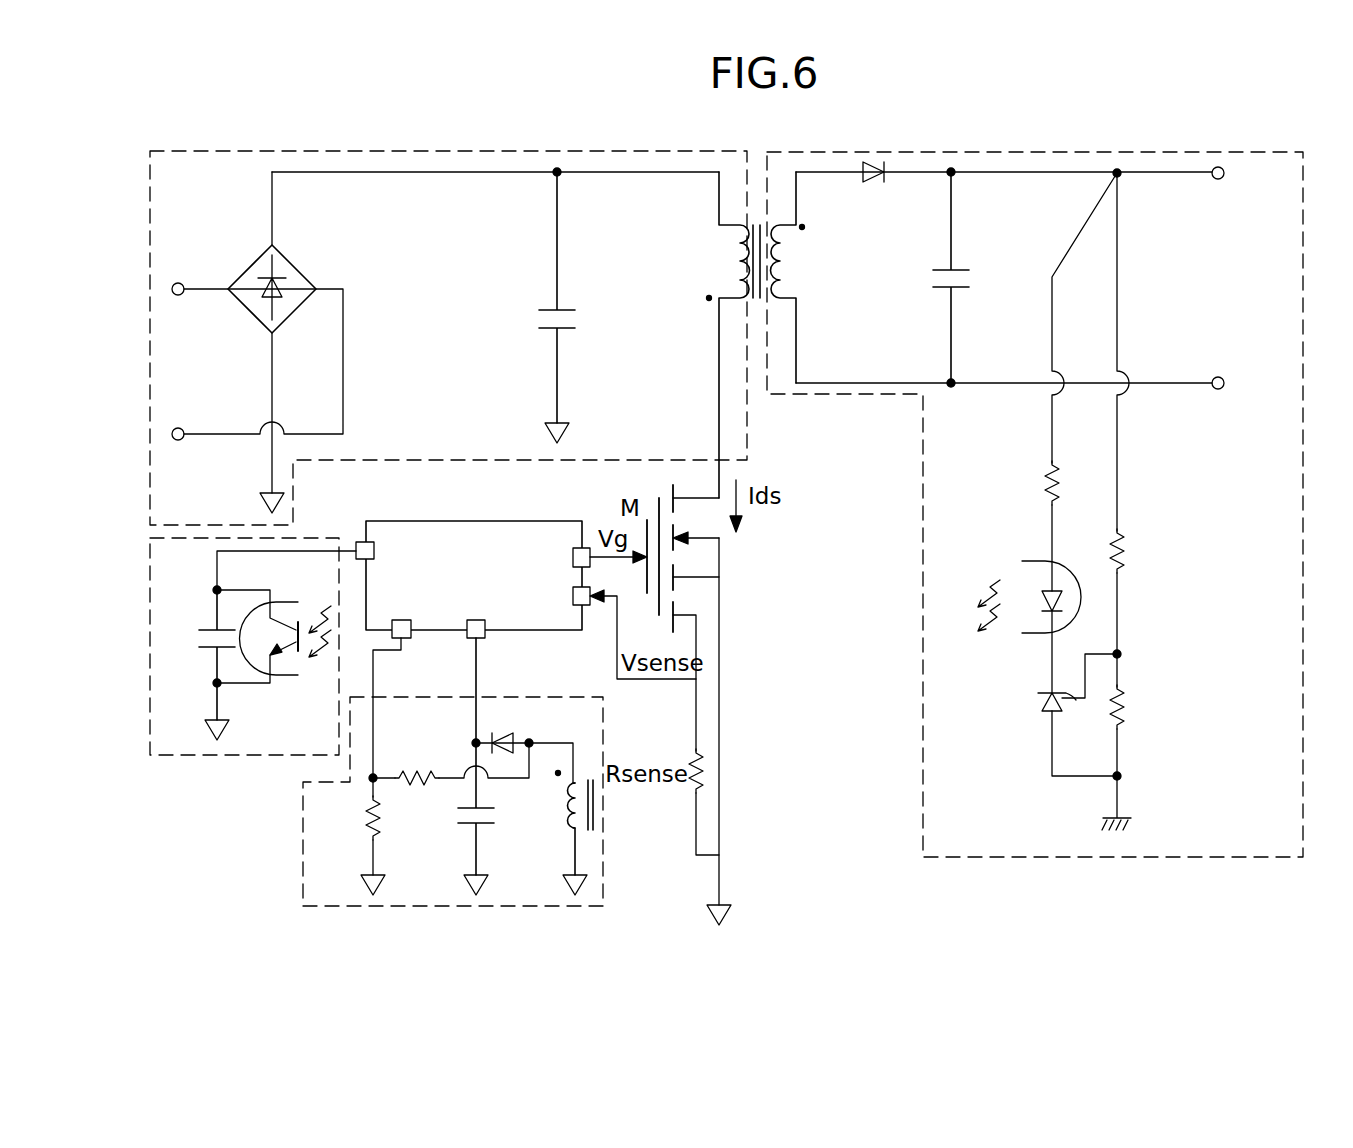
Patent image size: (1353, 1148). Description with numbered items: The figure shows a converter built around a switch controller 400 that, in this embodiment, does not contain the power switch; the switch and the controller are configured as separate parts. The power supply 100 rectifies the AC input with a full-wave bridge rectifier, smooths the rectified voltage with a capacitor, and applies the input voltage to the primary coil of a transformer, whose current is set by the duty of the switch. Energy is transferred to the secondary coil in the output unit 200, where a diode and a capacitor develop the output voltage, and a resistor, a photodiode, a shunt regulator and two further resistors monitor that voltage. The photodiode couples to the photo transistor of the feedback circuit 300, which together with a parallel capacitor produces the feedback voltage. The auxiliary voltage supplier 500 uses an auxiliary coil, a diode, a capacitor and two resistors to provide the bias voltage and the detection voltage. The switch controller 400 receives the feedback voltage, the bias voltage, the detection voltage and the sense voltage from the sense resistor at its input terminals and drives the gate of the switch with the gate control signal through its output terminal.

The power supply 100 is at (603, 150).
The output unit 200 is at (1014, 150).
The feedback circuit 300 is at (150, 685).
The switch controller 400 is at (537, 521).
The auxiliary voltage supplier 500 is at (603, 805).